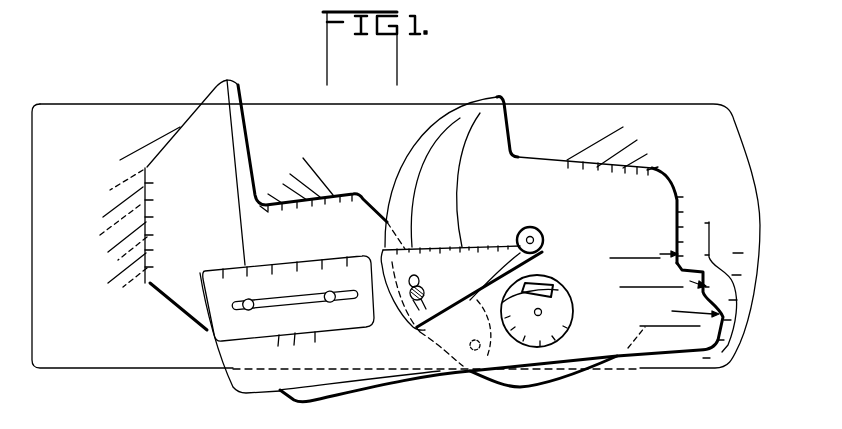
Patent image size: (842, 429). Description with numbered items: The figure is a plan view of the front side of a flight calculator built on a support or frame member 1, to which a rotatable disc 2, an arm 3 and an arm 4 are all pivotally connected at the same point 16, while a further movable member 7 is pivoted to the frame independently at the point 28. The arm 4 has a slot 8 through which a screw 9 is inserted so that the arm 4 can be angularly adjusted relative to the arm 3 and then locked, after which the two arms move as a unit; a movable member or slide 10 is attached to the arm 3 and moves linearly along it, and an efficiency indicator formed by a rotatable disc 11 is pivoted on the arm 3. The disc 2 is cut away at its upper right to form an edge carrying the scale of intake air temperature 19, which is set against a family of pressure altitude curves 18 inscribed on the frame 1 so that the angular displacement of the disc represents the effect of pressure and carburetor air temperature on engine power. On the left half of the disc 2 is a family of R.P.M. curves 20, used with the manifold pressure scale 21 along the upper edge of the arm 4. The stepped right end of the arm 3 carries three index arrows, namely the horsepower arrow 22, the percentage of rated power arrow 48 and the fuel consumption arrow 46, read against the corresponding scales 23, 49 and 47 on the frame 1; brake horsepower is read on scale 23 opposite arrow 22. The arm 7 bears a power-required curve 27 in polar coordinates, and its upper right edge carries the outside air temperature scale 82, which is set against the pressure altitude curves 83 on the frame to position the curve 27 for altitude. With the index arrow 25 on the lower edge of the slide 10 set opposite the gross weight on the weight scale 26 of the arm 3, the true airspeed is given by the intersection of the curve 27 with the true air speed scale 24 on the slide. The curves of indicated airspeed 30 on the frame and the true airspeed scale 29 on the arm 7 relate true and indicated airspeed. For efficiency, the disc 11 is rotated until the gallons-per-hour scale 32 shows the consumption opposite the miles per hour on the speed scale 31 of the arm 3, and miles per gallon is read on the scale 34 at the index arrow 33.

The support or frame member 1 is at (724, 118).
The rotatable disc 2 is at (503, 116).
The arm 3 is at (666, 348).
The arm 4 is at (510, 272).
The movable member (arm) 7 is at (212, 98).
The slot 8 is at (427, 305).
The screw 9 is at (424, 291).
The movable member (slide) 10 is at (224, 321).
The efficiency indicator (rotatable disc) 11 is at (483, 358).
The pivot point 16 is at (543, 234).
The family of curves (pressure altitude) 18 is at (610, 133).
The scale of intake air temperature 19 is at (600, 193).
The family of curves (R.P.M.) 20 is at (432, 135).
The scale of manifold pressure 21 is at (478, 247).
The horsepower index arrow 22 is at (657, 258).
The horsepower scale 23 is at (700, 195).
The true air speed scale 24 is at (283, 277).
The index arrow 25 is at (292, 326).
The weight scale 26 is at (298, 352).
The curve (power required) 27 is at (228, 118).
The pivot point 28 is at (475, 351).
The scale of true airspeed 29 is at (170, 217).
The curves of indicated airspeed 30 is at (97, 206).
The speed scale 31 is at (585, 347).
The gallons per hour scale 32 is at (547, 319).
The index arrow (miles per gallon) 33 is at (519, 302).
The miles per gallon scale 34 is at (550, 288).
The fuel consumption index arrow 46 is at (710, 317).
The fuel consumption scale 47 is at (735, 330).
The percentage of rated power index arrow 48 is at (675, 270).
The percentage of rated power scale 49 is at (718, 238).
The air temperature scale 82 is at (327, 222).
The family of curves (pressure altitude) 83 is at (314, 156).